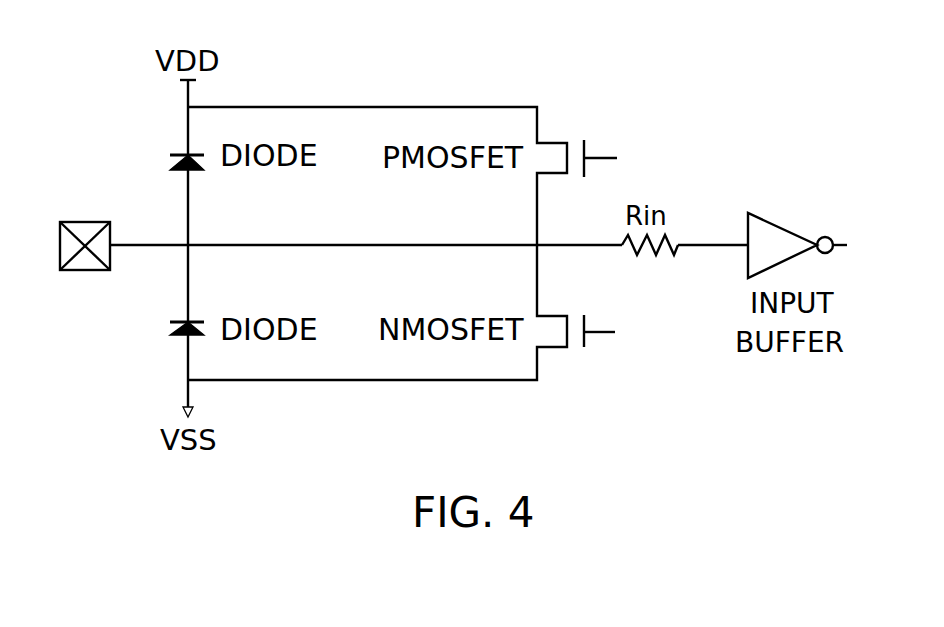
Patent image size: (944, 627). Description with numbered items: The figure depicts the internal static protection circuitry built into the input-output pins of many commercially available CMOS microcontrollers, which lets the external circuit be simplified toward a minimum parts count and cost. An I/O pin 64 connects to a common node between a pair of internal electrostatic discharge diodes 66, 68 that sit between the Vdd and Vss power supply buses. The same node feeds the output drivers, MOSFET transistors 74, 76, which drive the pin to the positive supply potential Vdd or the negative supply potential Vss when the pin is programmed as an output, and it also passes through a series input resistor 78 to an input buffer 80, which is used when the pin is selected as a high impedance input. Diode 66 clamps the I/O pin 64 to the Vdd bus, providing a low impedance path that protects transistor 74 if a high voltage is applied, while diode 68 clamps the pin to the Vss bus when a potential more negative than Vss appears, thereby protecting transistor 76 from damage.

The I/O pin 64 is at (73, 222).
The internal ESD diode 66 is at (170, 158).
The internal ESD diode 68 is at (177, 340).
The MOSFET transistor 74 is at (585, 147).
The MOSFET transistor 76 is at (570, 348).
The input resistor Rin 78 is at (678, 250).
The input buffer 80 is at (806, 236).